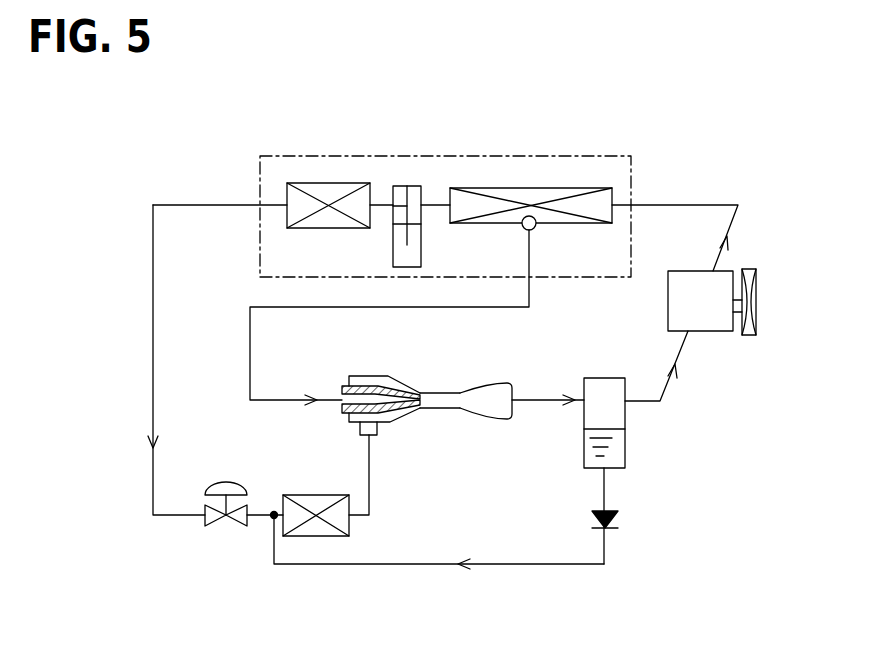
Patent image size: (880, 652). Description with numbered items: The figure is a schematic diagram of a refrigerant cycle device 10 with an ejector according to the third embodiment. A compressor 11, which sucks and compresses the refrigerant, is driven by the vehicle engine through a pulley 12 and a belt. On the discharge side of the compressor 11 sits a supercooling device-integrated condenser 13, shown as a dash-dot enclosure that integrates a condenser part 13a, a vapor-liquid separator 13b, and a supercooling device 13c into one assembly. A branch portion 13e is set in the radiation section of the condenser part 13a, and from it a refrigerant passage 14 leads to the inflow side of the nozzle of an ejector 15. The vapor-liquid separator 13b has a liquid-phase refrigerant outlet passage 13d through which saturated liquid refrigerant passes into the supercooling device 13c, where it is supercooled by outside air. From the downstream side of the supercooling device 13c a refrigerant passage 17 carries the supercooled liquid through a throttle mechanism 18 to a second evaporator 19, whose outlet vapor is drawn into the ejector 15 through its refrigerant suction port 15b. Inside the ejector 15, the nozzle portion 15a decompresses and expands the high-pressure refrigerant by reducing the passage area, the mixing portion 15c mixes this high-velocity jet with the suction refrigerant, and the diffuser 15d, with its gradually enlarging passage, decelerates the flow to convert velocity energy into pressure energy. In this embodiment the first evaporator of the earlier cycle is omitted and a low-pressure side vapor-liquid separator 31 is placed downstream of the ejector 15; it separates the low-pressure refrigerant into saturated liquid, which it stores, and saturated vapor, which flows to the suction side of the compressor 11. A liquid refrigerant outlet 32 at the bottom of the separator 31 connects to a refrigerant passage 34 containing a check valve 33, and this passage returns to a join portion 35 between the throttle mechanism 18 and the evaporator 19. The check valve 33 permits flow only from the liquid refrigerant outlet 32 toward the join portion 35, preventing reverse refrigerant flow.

The refrigerant cycle device 10 is at (680, 202).
The compressor 11 is at (725, 271).
The pulley 12 is at (758, 304).
The supercooling device-integrated condenser 13 is at (592, 152).
The condenser part 13a is at (545, 188).
The vapor-liquid separator 13b is at (414, 186).
The supercooling device 13c is at (325, 183).
The liquid-phase refrigerant outlet passage 13d is at (403, 186).
The branch portion 13e is at (535, 230).
The refrigerant passage 14 is at (295, 307).
The ejector 15 is at (443, 426).
The nozzle portion 15a is at (407, 384).
The refrigerant suction port 15b is at (378, 430).
The mixing portion 15c is at (437, 401).
The diffuser 15d is at (488, 406).
The refrigerant passage 17 is at (153, 260).
The throttle mechanism 18 is at (218, 526).
The second evaporator 19 is at (325, 536).
The low-pressure side vapor-liquid separator 31 is at (625, 415).
The liquid refrigerant outlet 32 is at (607, 470).
The check valve 33 is at (615, 520).
The refrigerant passage 34 is at (570, 567).
The join portion 35 is at (273, 512).